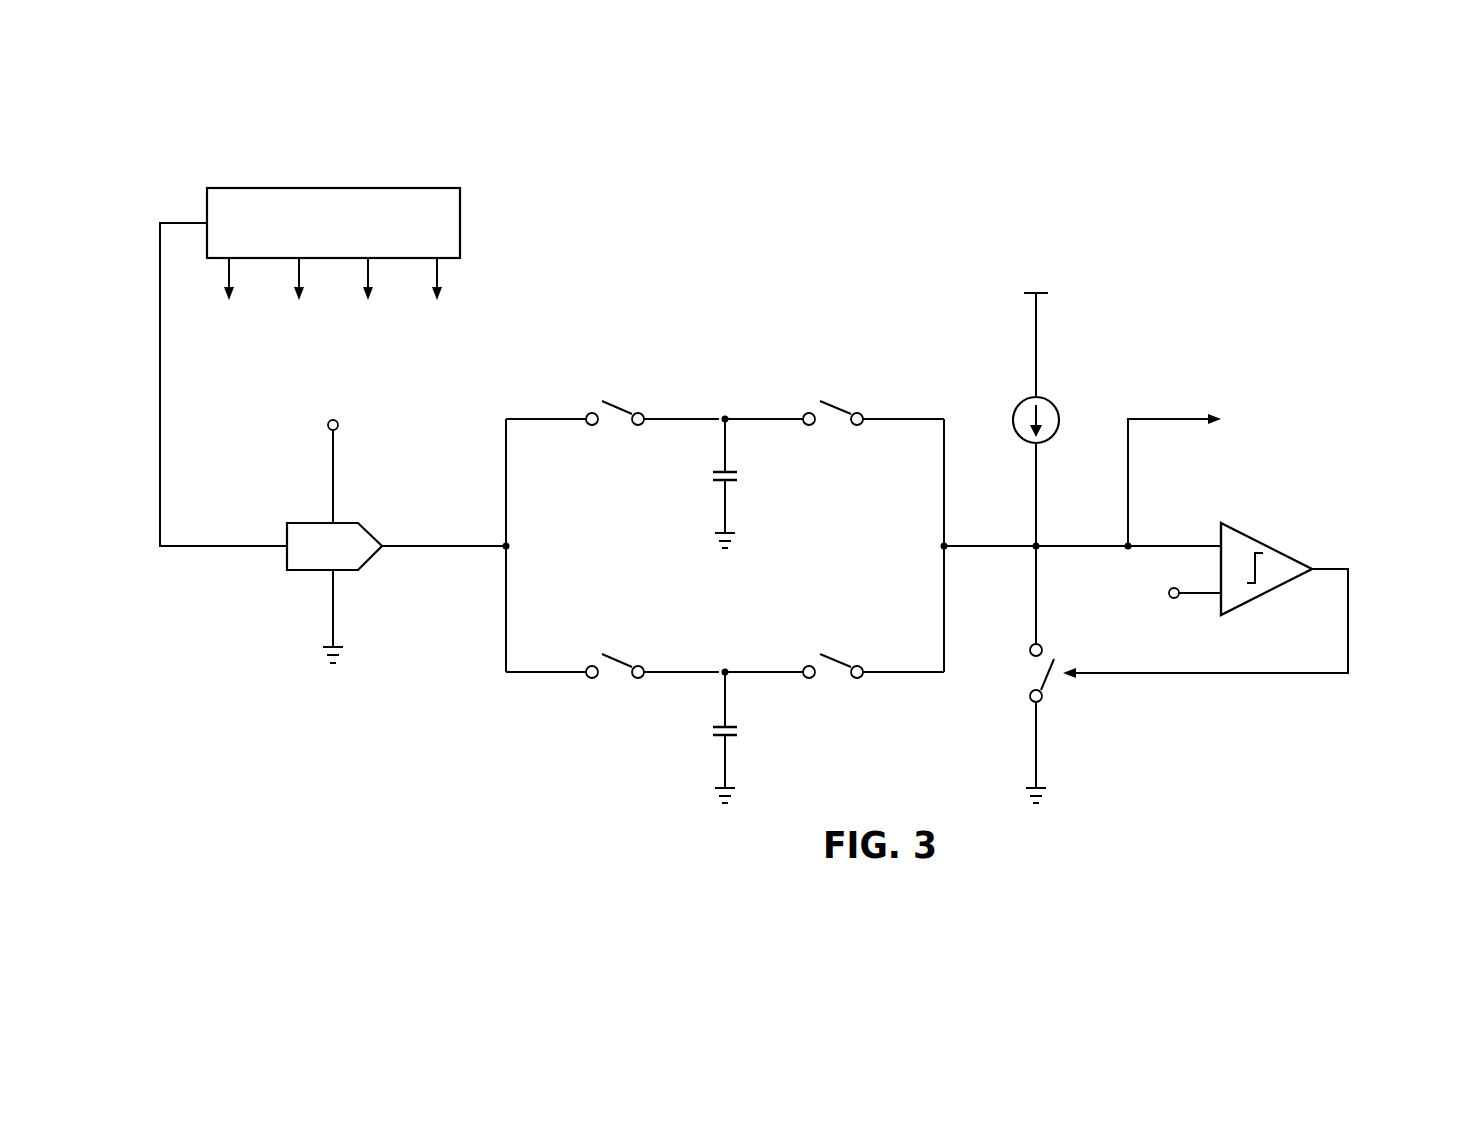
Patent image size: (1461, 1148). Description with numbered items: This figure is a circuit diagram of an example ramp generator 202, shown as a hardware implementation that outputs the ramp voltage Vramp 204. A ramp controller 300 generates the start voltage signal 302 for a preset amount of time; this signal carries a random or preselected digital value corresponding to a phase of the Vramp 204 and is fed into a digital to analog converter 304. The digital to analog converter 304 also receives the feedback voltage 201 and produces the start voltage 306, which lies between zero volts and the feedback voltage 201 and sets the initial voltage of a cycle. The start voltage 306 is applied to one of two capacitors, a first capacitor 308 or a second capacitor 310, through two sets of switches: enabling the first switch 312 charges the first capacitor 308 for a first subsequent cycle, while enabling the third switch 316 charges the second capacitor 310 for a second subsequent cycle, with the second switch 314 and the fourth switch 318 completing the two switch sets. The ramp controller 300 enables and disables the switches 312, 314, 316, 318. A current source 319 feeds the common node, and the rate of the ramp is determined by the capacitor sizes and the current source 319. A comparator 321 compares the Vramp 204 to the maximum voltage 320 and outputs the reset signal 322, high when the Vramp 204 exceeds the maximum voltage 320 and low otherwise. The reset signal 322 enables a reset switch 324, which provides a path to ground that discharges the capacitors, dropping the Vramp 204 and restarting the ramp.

The ramp generator 202 is at (1117, 212).
The ramp controller 300 is at (333, 188).
The feedback voltage 201 is at (328, 423).
The start voltage signal (Vstart[n]) 302 is at (224, 548).
The digital to analog converter 304 is at (311, 572).
The start voltage (Vstart[t]) 306 is at (504, 548).
The switch s1 312 is at (615, 411).
The switch s2 314 is at (833, 411).
The switch s3 316 is at (615, 664).
The switch s4 318 is at (833, 664).
The capacitor C1 308 is at (734, 454).
The capacitor C2 310 is at (738, 731).
The current source 319 is at (1048, 399).
The Vramp 204 is at (1174, 422).
The maximum voltage (Vmax) 320 is at (1178, 600).
The comparator 321 is at (1268, 590).
The reset signal 322 is at (1107, 677).
The reset switch 324 is at (1034, 678).